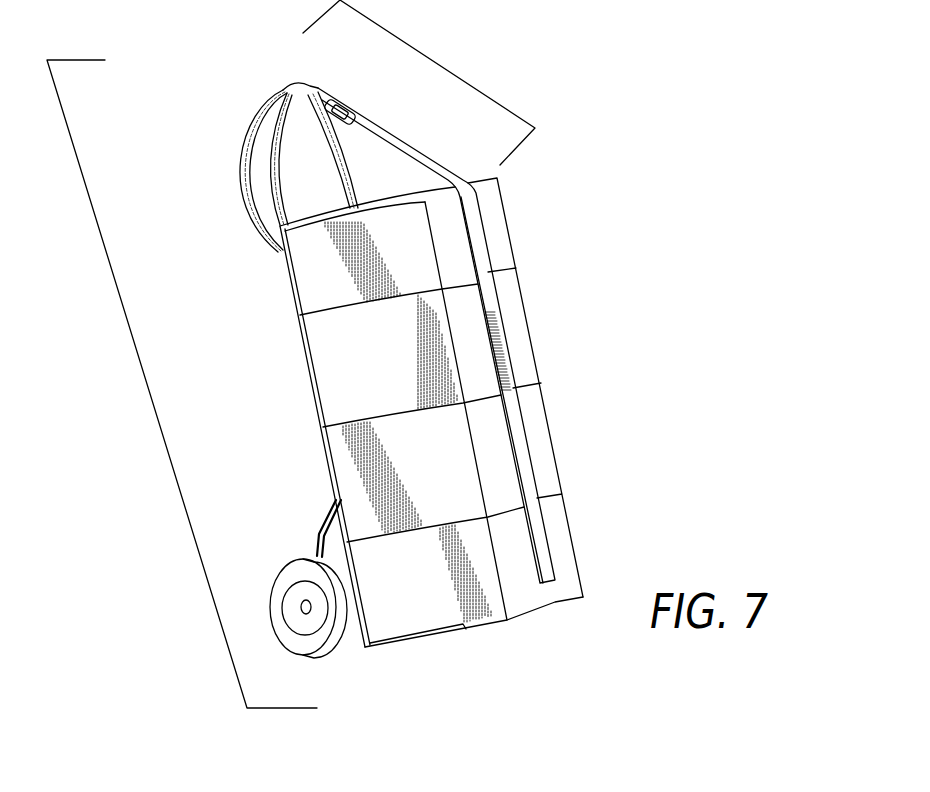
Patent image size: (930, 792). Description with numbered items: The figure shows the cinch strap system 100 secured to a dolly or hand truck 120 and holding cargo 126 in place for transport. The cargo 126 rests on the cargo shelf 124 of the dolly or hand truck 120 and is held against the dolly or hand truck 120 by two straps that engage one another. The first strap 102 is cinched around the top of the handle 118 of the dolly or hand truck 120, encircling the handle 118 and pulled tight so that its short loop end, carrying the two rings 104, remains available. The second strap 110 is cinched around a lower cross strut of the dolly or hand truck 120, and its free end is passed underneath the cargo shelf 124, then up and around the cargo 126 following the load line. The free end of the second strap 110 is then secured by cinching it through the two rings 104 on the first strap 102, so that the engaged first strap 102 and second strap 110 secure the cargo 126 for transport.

The cinch strap system 100 is at (342, 347).
The first strap 102 is at (313, 95).
The rings 104 is at (350, 115).
The second strap 110 is at (432, 165).
The handle 118 is at (252, 132).
The dolly or hand truck 120 is at (158, 423).
The cargo shelf 124 is at (397, 643).
The cargo 126 is at (345, 382).